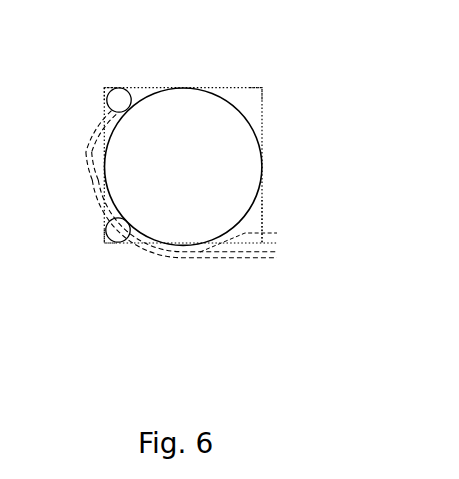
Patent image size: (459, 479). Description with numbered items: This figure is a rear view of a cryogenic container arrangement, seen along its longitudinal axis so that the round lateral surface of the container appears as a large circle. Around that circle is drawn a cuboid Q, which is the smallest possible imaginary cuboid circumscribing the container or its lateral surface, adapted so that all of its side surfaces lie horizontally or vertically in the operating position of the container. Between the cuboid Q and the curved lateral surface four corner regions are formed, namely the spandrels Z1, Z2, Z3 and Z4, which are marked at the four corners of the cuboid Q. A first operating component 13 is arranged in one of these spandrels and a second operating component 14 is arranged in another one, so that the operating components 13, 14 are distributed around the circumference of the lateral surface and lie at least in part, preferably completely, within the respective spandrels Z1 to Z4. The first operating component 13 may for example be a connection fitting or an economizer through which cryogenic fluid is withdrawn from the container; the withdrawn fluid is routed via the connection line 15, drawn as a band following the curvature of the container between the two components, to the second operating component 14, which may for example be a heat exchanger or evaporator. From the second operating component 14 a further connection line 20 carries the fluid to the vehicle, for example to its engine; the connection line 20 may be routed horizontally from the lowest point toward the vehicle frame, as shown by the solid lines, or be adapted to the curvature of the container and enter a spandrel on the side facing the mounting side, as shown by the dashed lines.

The first operating component 13 is at (119, 88).
The second operating component 14 is at (117, 232).
The connection line 15 is at (92, 173).
The connection line 20 is at (157, 253).
The cuboid Q is at (237, 86).
The spandrel Z1 is at (98, 84).
The spandrel Z2 is at (96, 222).
The spandrel Z3 is at (268, 90).
The spandrel Z4 is at (270, 208).